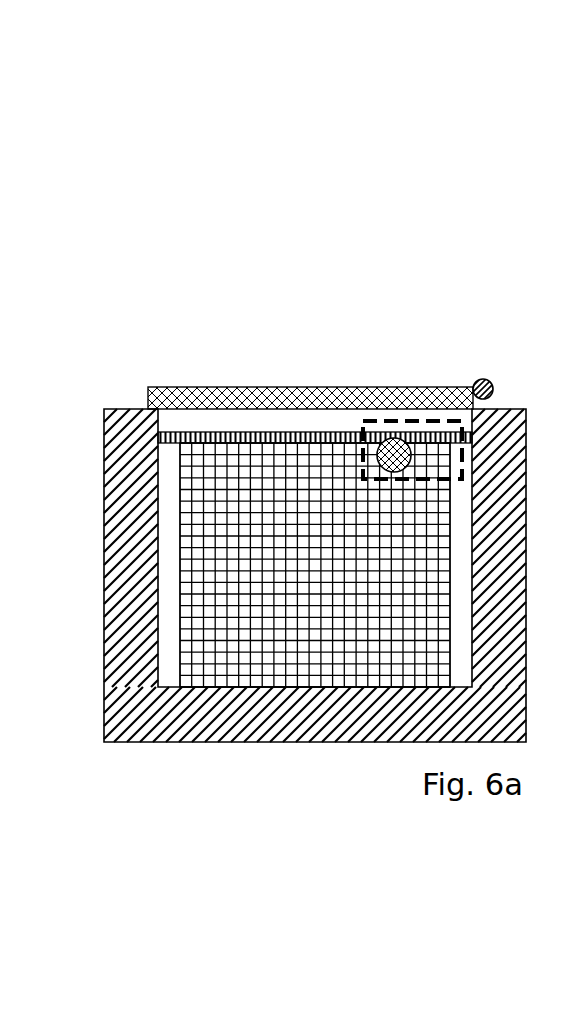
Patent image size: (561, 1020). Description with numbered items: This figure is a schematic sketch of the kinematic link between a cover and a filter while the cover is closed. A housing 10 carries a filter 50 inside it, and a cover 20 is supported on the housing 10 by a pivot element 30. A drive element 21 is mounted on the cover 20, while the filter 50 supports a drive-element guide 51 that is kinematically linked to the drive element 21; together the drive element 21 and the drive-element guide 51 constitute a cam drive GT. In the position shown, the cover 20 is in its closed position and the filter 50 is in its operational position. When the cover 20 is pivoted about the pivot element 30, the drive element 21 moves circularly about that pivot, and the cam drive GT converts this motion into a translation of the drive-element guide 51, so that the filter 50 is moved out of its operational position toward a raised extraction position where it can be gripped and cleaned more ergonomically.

The housing 10 is at (127, 404).
The cover 20 is at (321, 386).
The filter 50 is at (203, 451).
The drive-element guide 51 is at (407, 422).
The cam drive GT is at (439, 408).
The drive element 21 is at (393, 436).
The pivot element 30 is at (482, 369).